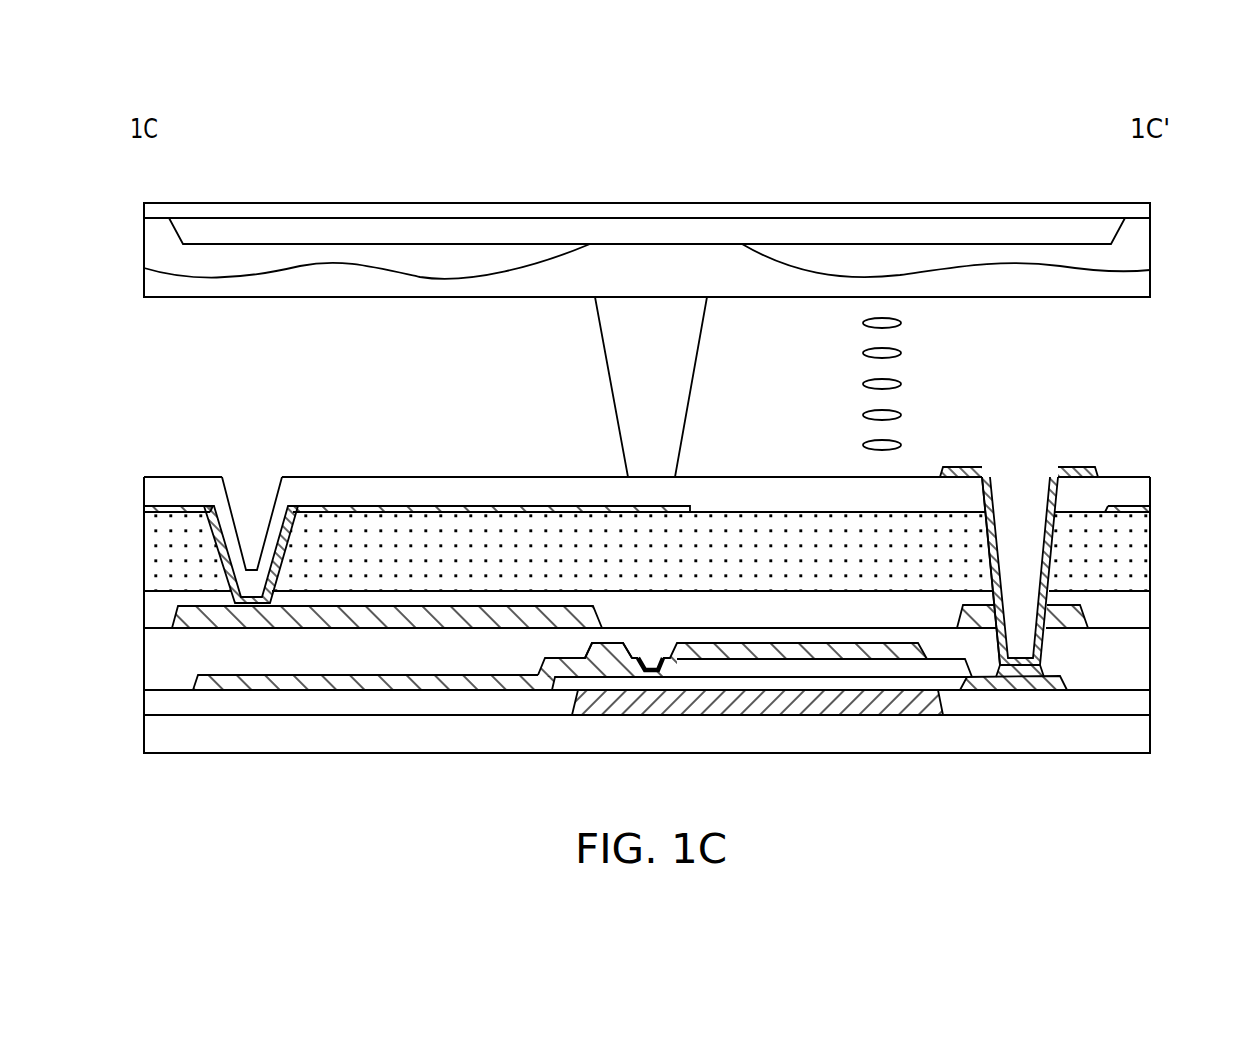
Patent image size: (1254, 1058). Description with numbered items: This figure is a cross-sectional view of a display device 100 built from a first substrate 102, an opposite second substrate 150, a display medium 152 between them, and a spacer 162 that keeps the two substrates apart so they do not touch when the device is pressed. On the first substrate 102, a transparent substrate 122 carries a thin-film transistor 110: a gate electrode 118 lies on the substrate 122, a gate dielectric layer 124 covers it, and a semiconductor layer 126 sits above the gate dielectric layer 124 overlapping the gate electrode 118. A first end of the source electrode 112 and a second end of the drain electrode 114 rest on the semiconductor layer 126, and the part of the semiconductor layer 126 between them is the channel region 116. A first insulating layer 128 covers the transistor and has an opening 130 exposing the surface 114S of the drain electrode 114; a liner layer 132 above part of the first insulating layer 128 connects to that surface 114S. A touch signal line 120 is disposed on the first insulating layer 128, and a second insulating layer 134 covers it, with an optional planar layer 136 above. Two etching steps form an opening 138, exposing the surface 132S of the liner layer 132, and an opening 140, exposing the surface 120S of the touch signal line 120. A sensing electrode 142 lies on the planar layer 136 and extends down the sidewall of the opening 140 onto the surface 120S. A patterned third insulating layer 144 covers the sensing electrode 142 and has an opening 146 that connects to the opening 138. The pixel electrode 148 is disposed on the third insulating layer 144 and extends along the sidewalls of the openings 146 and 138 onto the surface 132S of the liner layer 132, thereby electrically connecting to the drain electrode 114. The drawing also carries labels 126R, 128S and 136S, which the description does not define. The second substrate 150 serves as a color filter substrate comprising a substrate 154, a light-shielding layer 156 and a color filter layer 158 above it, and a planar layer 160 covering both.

The display device 100 is at (104, 118).
The first substrate 102 is at (117, 445).
The thin-film transistor 110 is at (638, 638).
The source electrode 112 is at (490, 690).
The drain electrode 114 is at (1050, 690).
The surface of the drain electrode 114S is at (977, 690).
The channel region 116 is at (657, 690).
The gate electrode 118 is at (903, 700).
The touch signal line 120 is at (197, 615).
The surface of the touch signal line 120S is at (325, 602).
The substrate 122 is at (1135, 734).
The gate dielectric layer 124 is at (1135, 705).
The semiconductor layer 126 is at (825, 690).
The recess of semiconductor layer 126R is at (652, 660).
The first insulating layer 128 is at (1135, 679).
The surface of insulating layer 128S is at (1103, 625).
The opening 130 is at (1062, 652).
The liner layer 132 is at (1068, 612).
The surface of the liner layer 132S is at (1021, 655).
The second insulating layer 134 is at (1135, 607).
The planar layer 136 is at (1135, 527).
The surface of dielectric layer 136S is at (815, 506).
The opening 138 is at (983, 552).
The opening 140 is at (222, 552).
The sensing electrode 142 is at (150, 509).
The third insulating layer 144 is at (1132, 487).
The opening 146 is at (1062, 493).
The pixel electrode 148 is at (1060, 466).
The second substrate 150 is at (118, 193).
The display medium 152 is at (898, 352).
The substrate 154 is at (961, 215).
The light-shielding layer 156 is at (886, 232).
The color filter layer 158 is at (813, 262).
The planar layer 160 is at (722, 265).
The spacer 162 is at (649, 322).